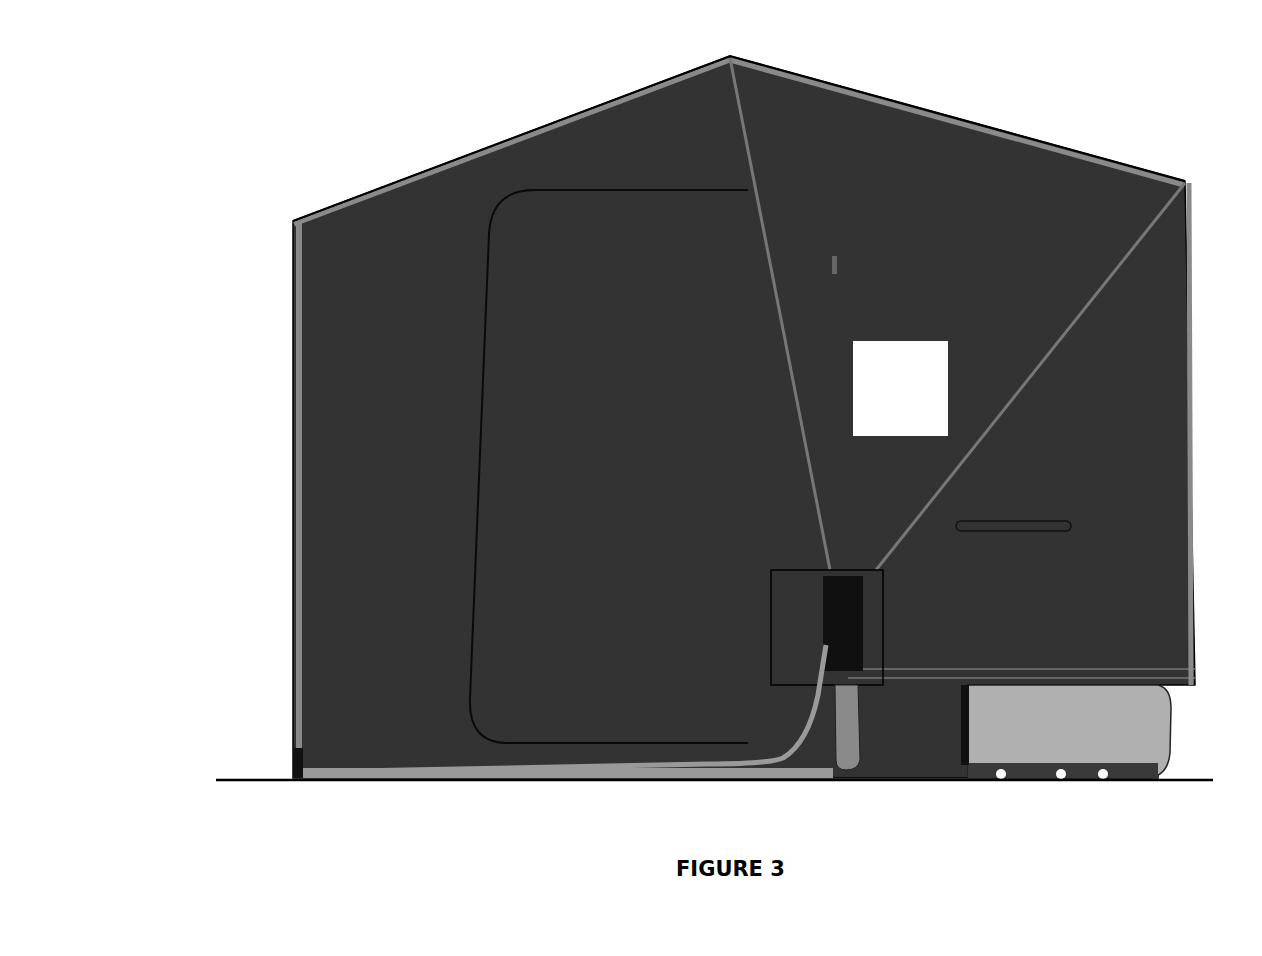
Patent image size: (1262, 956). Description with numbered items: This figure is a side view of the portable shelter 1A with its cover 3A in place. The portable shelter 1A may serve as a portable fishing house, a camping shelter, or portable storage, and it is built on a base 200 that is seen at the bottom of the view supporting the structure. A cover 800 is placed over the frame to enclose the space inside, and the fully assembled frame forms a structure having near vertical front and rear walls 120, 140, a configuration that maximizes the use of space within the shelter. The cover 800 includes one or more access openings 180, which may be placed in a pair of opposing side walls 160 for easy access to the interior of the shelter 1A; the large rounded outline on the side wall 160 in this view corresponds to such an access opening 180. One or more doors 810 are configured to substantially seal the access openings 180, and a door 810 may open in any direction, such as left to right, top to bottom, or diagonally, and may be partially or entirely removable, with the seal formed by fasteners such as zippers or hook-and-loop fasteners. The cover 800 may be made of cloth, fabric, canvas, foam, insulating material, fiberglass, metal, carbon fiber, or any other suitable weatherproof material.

The portable shelter 1A is at (1045, 104).
The cover 3A is at (838, 77).
The front wall 120 is at (284, 510).
The rear wall 140 is at (1188, 422).
The side wall 160 is at (345, 657).
The access opening 180 is at (450, 160).
The base 200 is at (1165, 726).
The cover 800 is at (500, 130).
The door 810 is at (420, 763).